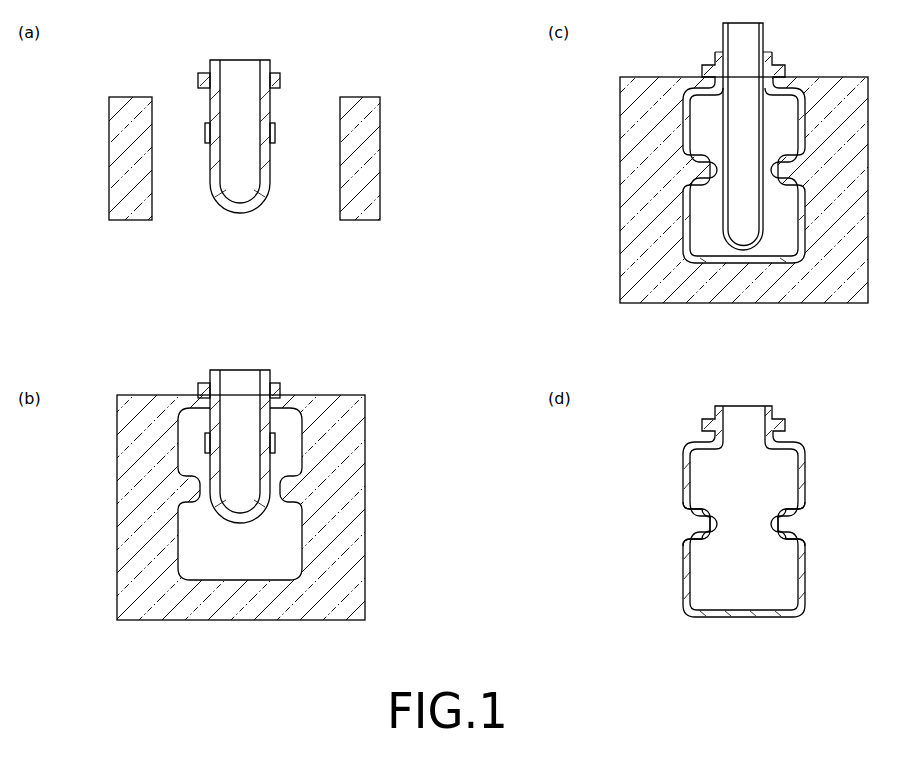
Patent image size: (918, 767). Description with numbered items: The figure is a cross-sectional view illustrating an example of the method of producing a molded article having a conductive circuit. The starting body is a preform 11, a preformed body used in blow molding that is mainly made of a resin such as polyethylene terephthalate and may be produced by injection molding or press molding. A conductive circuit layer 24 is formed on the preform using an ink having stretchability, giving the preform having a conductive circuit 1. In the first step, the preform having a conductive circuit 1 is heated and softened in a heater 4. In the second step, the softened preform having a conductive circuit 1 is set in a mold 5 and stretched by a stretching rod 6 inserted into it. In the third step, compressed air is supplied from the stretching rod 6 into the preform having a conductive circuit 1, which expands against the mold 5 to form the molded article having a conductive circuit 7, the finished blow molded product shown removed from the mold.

The preform having a conductive circuit 1 is at (222, 41).
The preform 11 is at (280, 79).
The conductive circuit layer 24 is at (275, 128).
The heater 4 is at (149, 222).
The mold 5 is at (345, 410).
The stretching rod 6 is at (747, 48).
The molded article having a conductive circuit 7 is at (815, 402).